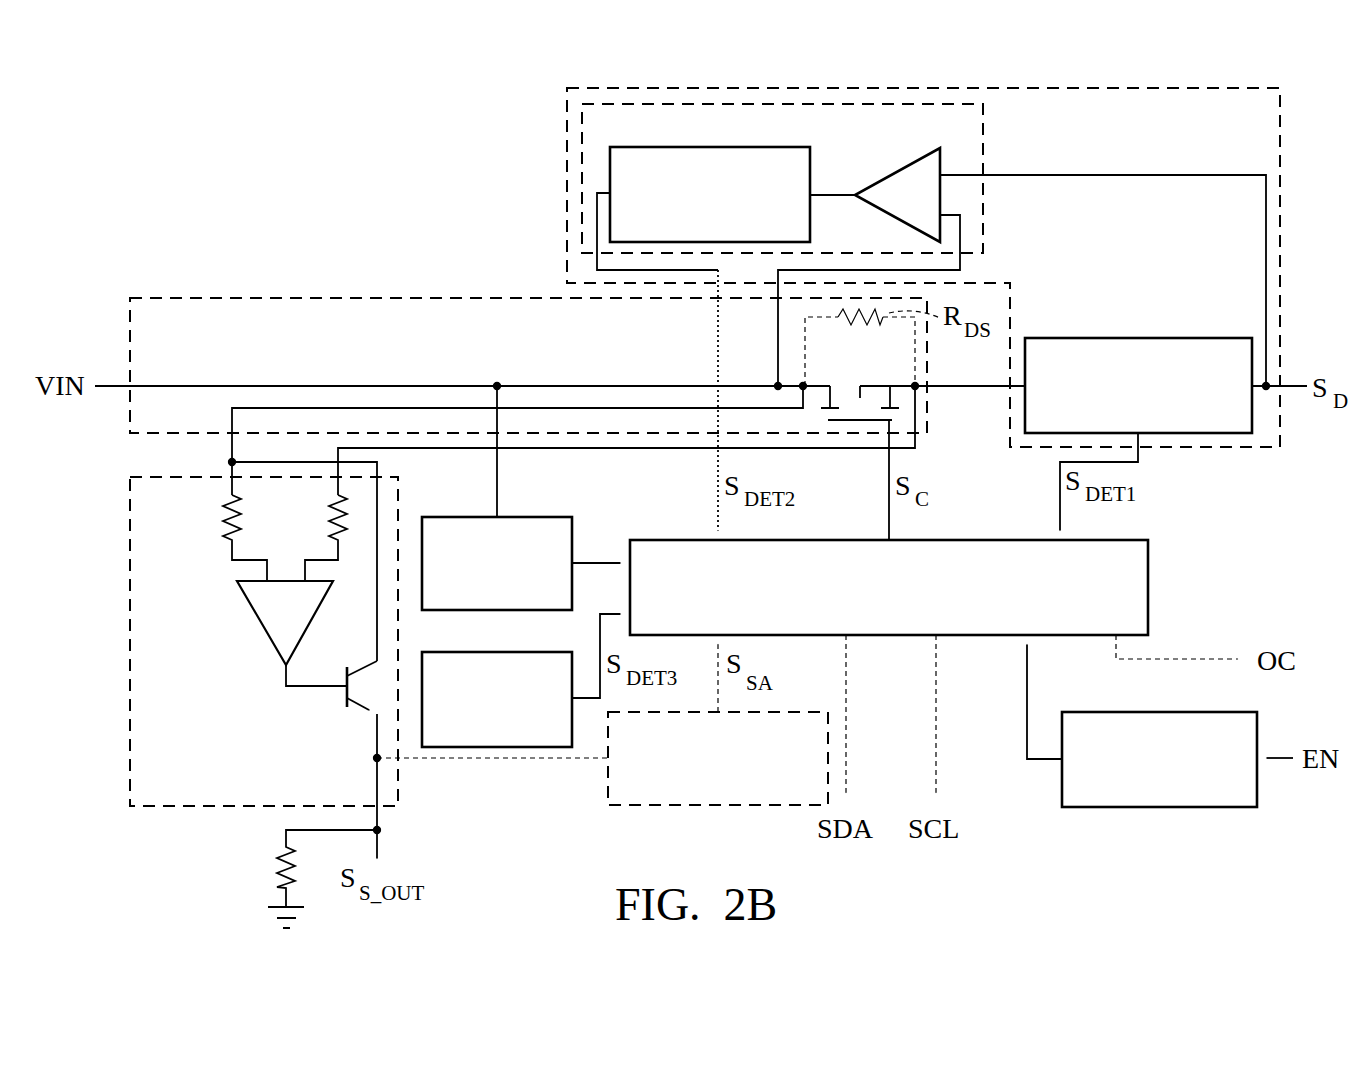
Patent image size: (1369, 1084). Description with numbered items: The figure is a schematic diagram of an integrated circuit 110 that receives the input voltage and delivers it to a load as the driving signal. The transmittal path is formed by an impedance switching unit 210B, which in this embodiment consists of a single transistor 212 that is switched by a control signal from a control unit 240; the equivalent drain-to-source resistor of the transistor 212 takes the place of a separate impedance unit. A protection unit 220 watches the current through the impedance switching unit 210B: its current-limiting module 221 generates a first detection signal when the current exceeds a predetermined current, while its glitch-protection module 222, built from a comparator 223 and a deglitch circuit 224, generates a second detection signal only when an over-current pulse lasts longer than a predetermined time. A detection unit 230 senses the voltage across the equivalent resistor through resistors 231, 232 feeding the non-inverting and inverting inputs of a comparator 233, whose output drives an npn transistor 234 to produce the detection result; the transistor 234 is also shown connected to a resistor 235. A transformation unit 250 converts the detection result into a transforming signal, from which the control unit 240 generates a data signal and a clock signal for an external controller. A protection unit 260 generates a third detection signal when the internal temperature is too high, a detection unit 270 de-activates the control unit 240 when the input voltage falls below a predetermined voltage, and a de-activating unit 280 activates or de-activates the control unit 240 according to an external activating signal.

The integrated circuit 110 is at (128, 150).
The impedance switching unit 210B is at (174, 298).
The transistor 212 is at (853, 391).
The protection unit 220 is at (1281, 127).
The current-limiting module 221 is at (1027, 338).
The glitch-protection module 222 is at (984, 127).
The comparator 223 is at (901, 169).
The deglitch circuit 224 is at (612, 147).
The detection unit 230 is at (128, 640).
The resistor 231 is at (226, 522).
The resistor 232 is at (331, 522).
The comparator 233 is at (257, 625).
The transistor 234 is at (361, 708).
The resistor 235 is at (279, 872).
The control unit 240 is at (633, 540).
The transformation unit 250 is at (610, 806).
The protection unit 260 is at (422, 652).
The detection unit 270 is at (422, 517).
The de-activating unit 280 is at (1064, 712).